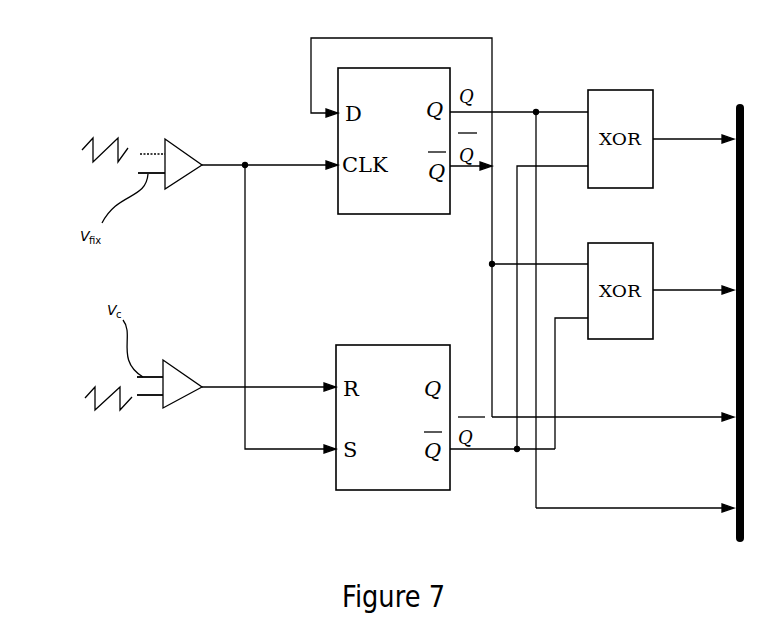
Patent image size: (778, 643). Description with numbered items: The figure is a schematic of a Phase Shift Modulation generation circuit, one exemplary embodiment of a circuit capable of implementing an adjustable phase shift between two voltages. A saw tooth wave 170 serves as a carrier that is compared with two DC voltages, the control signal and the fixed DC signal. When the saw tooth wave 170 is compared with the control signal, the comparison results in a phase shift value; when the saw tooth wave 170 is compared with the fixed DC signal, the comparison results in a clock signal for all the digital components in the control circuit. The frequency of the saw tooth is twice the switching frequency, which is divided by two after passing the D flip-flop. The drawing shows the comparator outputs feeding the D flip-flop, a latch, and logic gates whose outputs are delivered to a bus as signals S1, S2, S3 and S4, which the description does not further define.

The saw tooth wave 170 is at (80, 134).
The switch control signal S1 is at (693, 126).
The switch control signal S2 is at (613, 404).
The switch control signal S3 is at (635, 495).
The switch control signal S4 is at (693, 278).